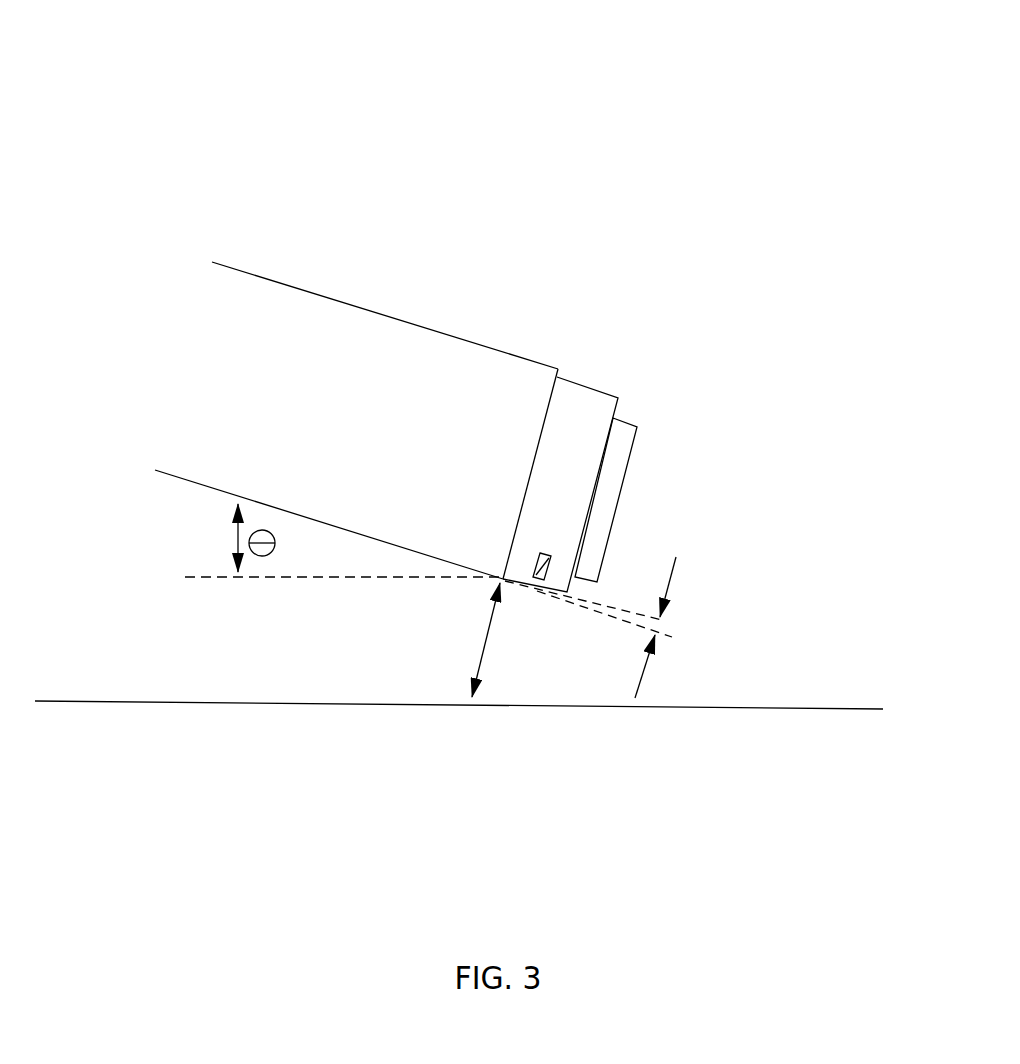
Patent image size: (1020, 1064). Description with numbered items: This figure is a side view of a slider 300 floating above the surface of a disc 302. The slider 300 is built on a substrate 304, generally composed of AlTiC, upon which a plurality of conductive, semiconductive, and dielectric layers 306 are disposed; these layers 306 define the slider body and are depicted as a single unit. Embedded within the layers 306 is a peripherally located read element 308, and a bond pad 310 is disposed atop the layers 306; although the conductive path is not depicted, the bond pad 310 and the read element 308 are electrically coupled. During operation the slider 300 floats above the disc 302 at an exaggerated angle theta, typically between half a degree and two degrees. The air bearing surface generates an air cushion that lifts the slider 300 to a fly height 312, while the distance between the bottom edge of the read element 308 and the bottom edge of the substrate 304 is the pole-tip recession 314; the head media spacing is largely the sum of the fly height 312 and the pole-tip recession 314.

The slider 300 is at (530, 173).
The disc 302 is at (744, 708).
The substrate 304 is at (302, 427).
The layers 306 is at (579, 400).
The read element 308 is at (545, 570).
The bond pad 310 is at (630, 469).
The fly height 312 is at (483, 647).
The pole-tip recession 314 is at (660, 620).